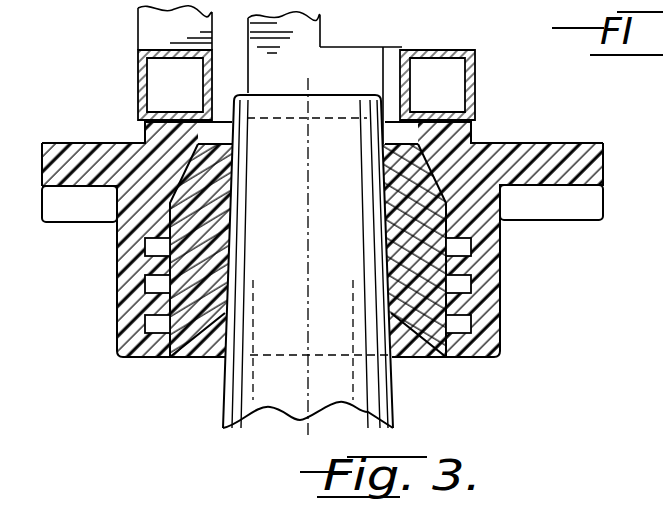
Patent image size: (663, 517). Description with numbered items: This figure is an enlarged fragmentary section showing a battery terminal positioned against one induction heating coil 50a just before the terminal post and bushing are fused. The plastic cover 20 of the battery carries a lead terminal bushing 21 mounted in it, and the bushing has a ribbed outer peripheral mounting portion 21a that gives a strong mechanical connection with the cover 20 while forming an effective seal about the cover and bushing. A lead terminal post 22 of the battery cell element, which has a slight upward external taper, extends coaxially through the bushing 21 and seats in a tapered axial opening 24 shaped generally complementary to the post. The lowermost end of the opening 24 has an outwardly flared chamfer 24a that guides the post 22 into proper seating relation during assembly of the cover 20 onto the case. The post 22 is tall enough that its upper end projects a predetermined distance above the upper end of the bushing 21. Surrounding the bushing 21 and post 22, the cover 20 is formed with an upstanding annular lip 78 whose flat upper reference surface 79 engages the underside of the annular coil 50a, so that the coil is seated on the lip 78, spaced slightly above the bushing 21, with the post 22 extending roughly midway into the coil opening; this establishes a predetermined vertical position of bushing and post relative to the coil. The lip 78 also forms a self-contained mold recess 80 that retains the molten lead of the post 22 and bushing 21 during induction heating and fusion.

The cover 20 is at (90, 157).
The lead terminal bushing 21 is at (190, 257).
The ribbed outer peripheral mounting portion 21a is at (472, 323).
The lead terminal post 22 is at (247, 390).
The tapered axial opening 24 is at (393, 280).
The outwardly flared chamfer 24a is at (416, 328).
The induction heating coil 50a is at (160, 50).
The upstanding annular lip 78 is at (472, 131).
The flat upper reference surface 79 is at (445, 112).
The mold recess 80 is at (406, 132).